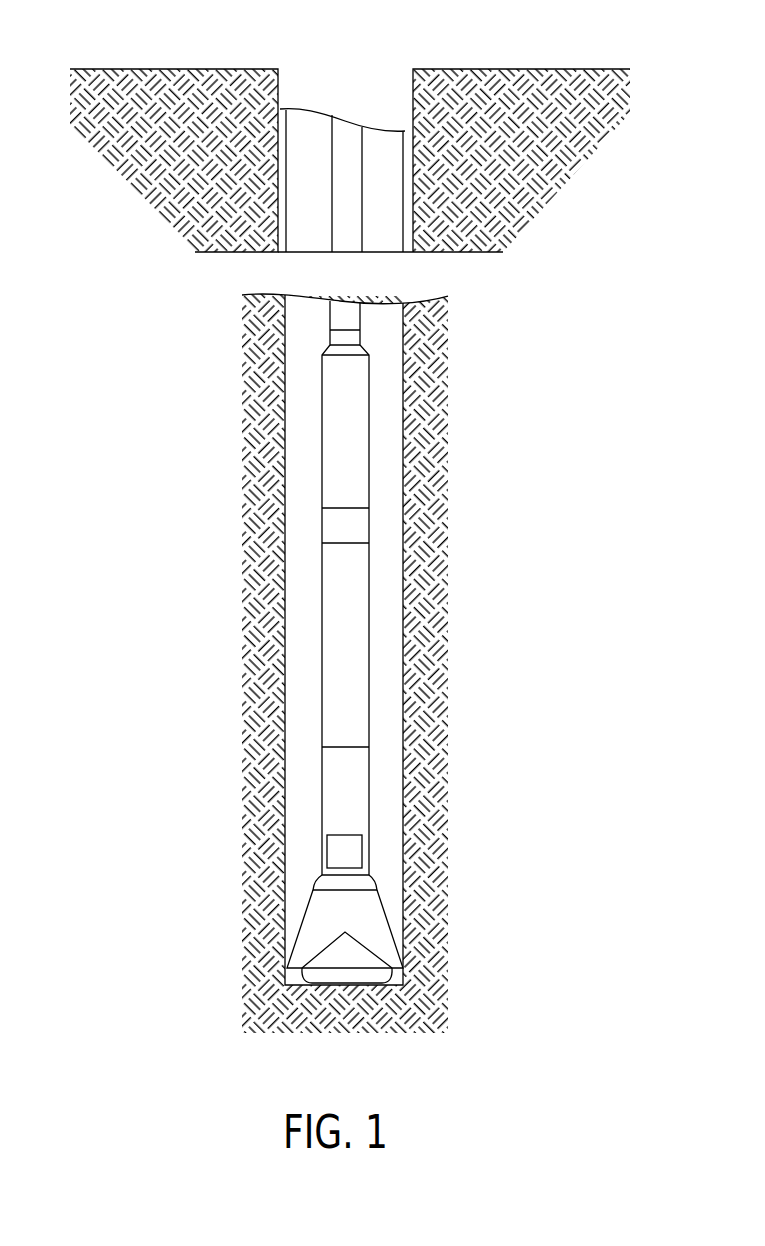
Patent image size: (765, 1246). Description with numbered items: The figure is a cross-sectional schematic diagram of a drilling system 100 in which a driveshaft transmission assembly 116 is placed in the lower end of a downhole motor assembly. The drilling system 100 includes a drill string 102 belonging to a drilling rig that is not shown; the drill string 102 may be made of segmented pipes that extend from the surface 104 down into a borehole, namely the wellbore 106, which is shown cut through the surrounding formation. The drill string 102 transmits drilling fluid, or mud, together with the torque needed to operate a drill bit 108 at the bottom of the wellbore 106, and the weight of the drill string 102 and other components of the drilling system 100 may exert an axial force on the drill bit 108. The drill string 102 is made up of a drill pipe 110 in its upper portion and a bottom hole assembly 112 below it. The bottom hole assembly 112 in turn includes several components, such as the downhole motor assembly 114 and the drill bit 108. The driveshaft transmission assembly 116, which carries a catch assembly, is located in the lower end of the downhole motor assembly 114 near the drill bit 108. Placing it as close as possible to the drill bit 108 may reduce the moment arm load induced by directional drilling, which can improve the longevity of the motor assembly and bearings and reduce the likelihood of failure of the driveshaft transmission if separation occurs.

The drilling system 100 is at (118, 272).
The drill string 102 is at (345, 217).
The surface 104 is at (562, 78).
The wellbore 106 is at (361, 65).
The drill bit 108 is at (390, 927).
The drill pipe 110 is at (360, 337).
The bottom hole assembly 112 is at (363, 617).
The downhole motor assembly 114 is at (358, 818).
The driveshaft transmission assembly 116 is at (327, 855).